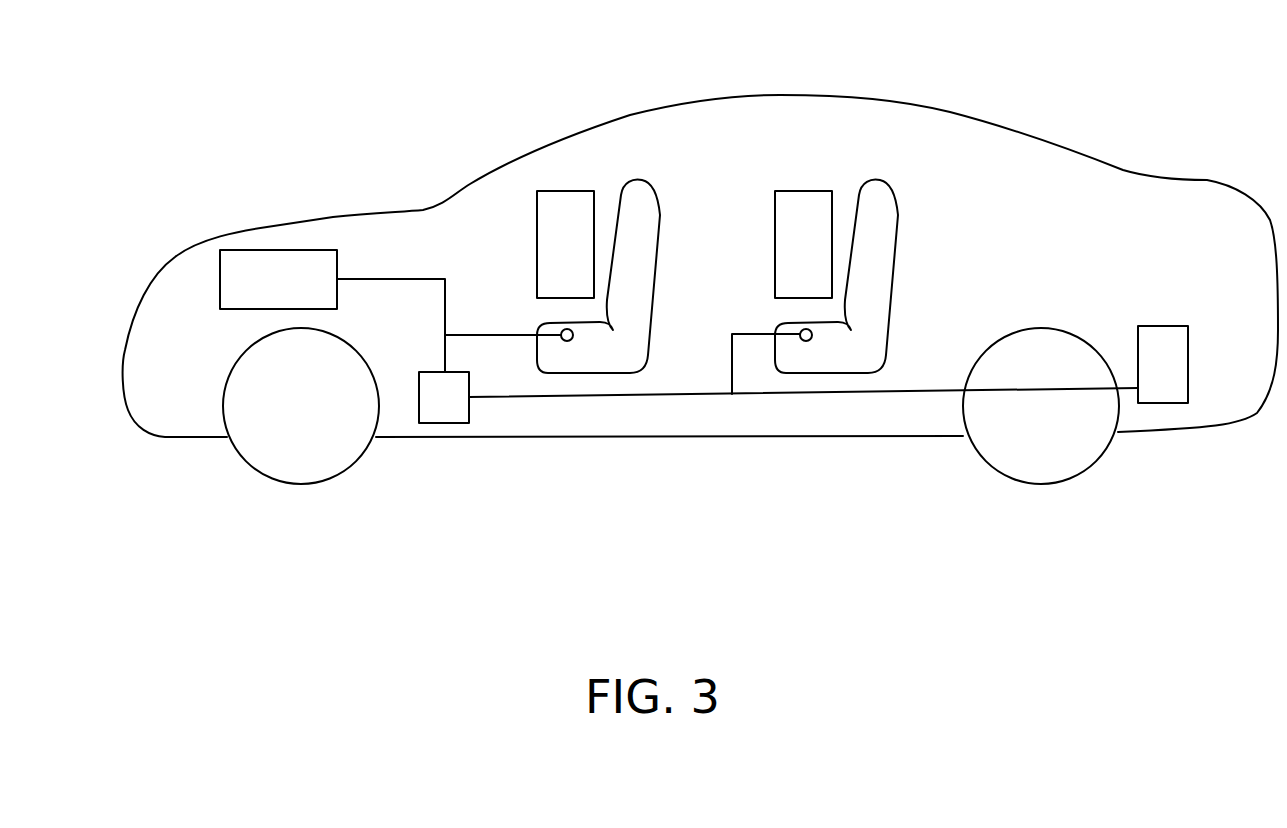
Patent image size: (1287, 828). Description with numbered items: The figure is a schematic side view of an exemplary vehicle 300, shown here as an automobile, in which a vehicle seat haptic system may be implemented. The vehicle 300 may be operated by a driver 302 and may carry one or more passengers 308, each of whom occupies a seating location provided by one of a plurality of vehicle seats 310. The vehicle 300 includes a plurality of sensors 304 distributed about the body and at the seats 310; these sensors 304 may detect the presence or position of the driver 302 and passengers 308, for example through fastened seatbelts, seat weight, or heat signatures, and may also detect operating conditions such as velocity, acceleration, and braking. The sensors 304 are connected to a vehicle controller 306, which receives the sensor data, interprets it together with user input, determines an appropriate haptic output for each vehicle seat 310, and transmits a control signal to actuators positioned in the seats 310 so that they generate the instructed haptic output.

The vehicle 300 is at (758, 95).
The driver 302 is at (561, 200).
The sensors 304 is at (243, 309).
The vehicle controller 306 is at (430, 423).
The passengers 308 is at (802, 203).
The vehicle seats 310 is at (602, 363).